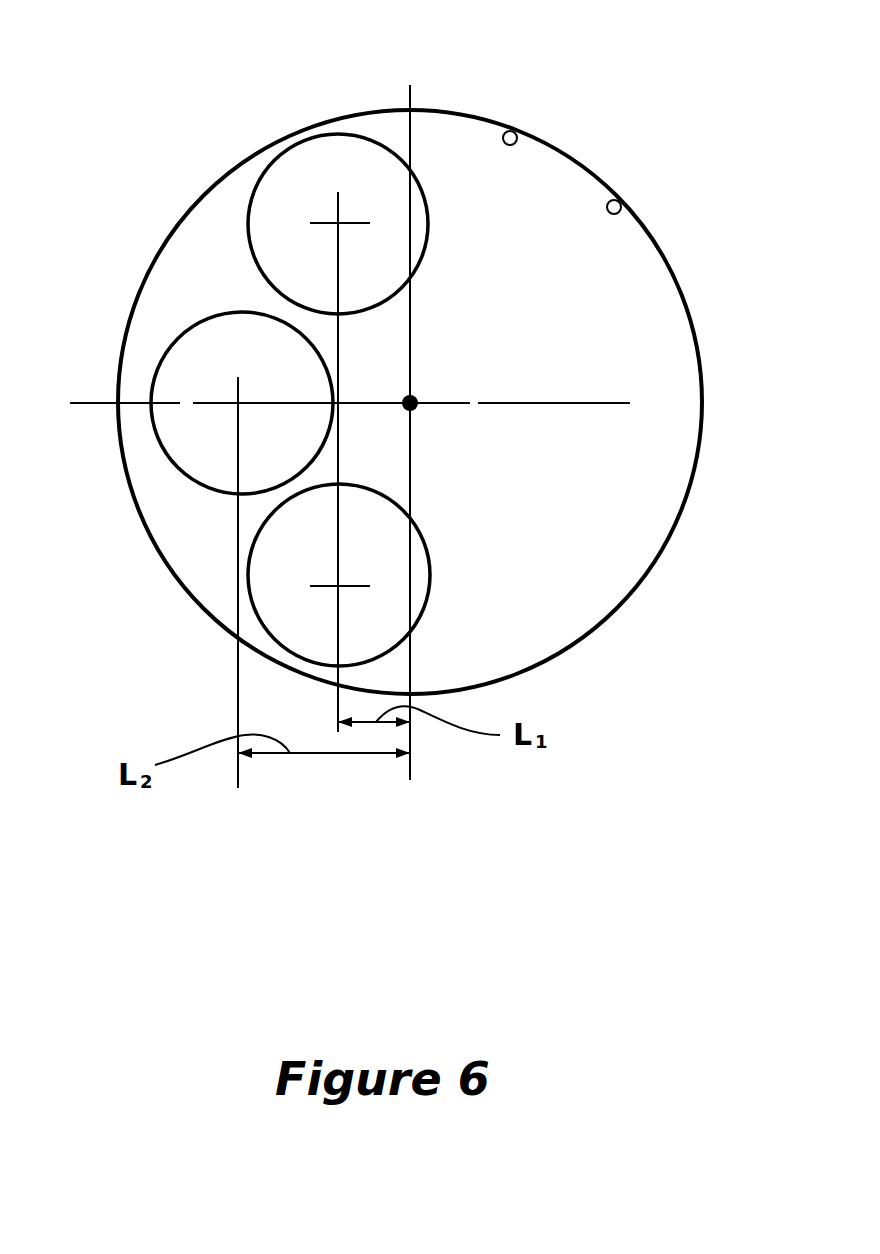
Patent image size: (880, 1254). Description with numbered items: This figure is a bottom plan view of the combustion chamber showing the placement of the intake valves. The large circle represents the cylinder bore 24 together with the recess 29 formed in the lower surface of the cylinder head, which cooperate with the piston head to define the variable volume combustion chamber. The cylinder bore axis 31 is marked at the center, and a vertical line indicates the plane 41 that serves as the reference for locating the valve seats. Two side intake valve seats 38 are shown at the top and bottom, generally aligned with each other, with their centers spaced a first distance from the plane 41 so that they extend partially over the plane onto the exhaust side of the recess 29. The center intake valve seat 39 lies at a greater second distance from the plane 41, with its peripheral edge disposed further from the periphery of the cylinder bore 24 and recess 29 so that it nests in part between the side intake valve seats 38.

The cylinder bore 24 is at (633, 205).
The recess 29 is at (527, 133).
The cylinder bore axis 31 is at (416, 398).
The side intake valve seats 38 is at (268, 174).
The center intake valve seat 39 is at (178, 463).
The plane 41 is at (413, 100).